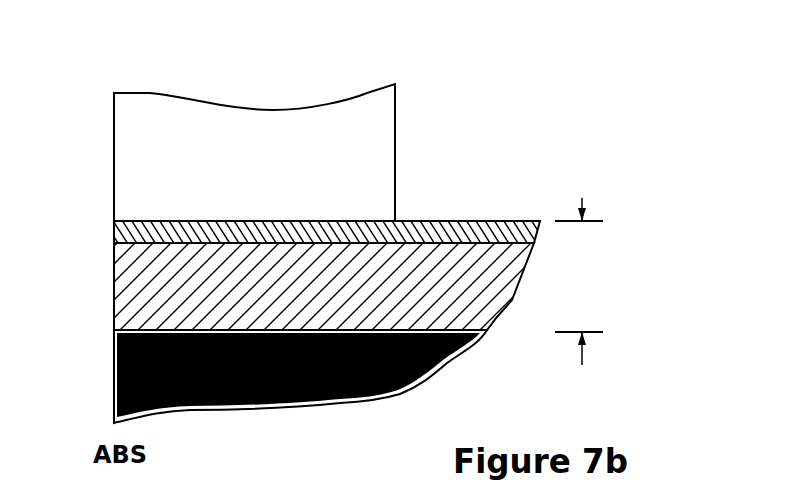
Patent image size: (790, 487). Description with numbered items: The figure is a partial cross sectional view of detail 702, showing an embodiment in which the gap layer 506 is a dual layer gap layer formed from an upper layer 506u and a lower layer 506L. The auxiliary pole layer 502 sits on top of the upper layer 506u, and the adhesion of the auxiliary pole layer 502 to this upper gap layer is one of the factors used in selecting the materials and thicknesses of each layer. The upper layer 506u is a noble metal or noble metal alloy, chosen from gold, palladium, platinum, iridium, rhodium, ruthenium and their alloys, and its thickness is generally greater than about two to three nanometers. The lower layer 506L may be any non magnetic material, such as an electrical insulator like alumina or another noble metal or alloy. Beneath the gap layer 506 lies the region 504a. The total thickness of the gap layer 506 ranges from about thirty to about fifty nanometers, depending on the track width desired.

The detail 702 is at (325, 213).
The auxiliary pole layer 502 is at (273, 180).
The upper layer 506u is at (450, 228).
The lower layer 506L is at (331, 300).
The gap layer 506 is at (325, 265).
The etched nonmagnetic gap/substrate layer 504a is at (293, 383).